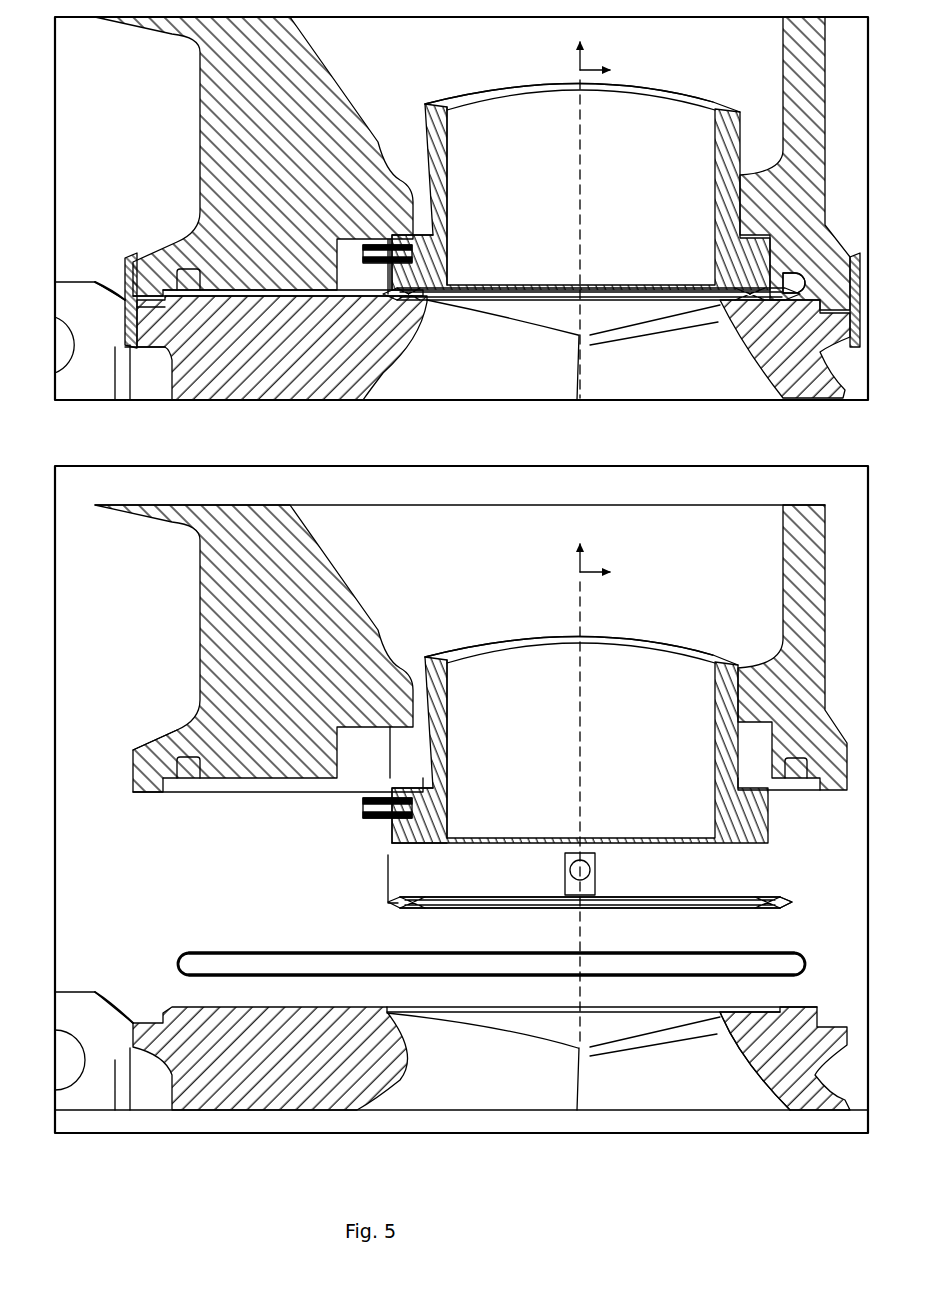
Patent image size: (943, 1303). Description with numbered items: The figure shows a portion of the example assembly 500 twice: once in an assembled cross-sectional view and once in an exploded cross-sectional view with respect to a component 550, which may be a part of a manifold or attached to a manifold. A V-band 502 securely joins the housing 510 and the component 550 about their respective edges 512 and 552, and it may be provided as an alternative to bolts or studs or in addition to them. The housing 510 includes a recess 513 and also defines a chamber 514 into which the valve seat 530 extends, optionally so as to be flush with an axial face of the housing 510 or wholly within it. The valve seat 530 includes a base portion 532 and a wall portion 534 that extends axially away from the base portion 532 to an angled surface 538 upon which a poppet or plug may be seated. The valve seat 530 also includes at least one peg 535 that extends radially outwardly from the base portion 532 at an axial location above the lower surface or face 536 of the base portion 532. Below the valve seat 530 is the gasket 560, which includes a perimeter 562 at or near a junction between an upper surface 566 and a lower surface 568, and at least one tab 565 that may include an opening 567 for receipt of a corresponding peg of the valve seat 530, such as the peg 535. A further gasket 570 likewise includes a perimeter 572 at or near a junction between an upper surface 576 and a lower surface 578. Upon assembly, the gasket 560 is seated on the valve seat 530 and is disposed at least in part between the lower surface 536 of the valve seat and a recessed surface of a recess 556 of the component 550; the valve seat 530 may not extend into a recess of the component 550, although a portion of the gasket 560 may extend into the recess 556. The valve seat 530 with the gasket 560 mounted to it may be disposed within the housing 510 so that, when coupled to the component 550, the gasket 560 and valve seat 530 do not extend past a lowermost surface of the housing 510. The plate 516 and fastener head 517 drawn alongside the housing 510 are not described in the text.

The assembly 500 is at (461, 575).
The V-band 502 is at (140, 245).
The housing 510 is at (254, 404).
The edge of housing 512 is at (132, 752).
The recess of housing 513 is at (755, 758).
The chamber 514 is at (770, 403).
The plate 516 is at (278, 794).
The fastener head 517 is at (190, 774).
The valve seat 530 is at (581, 463).
The base portion 532 is at (432, 264).
The wall portion 534 is at (437, 182).
The peg 535 is at (368, 818).
The lower surface of base portion 536 is at (425, 845).
The angled surface 538 is at (456, 90).
The component 550 is at (452, 703).
The edge of component 552 is at (121, 1017).
The recess of component 556 is at (767, 1013).
The gasket 560 is at (612, 290).
The perimeter of gasket 562 is at (770, 900).
The tab 565 is at (386, 888).
The upper surface of gasket 566 is at (425, 897).
The opening 567 is at (594, 865).
The lower surface of gasket 568 is at (425, 906).
The gasket 570 is at (800, 268).
The perimeter of gasket 572 is at (808, 955).
The upper surface of gasket 576 is at (278, 953).
The lower surface of gasket 578 is at (278, 975).